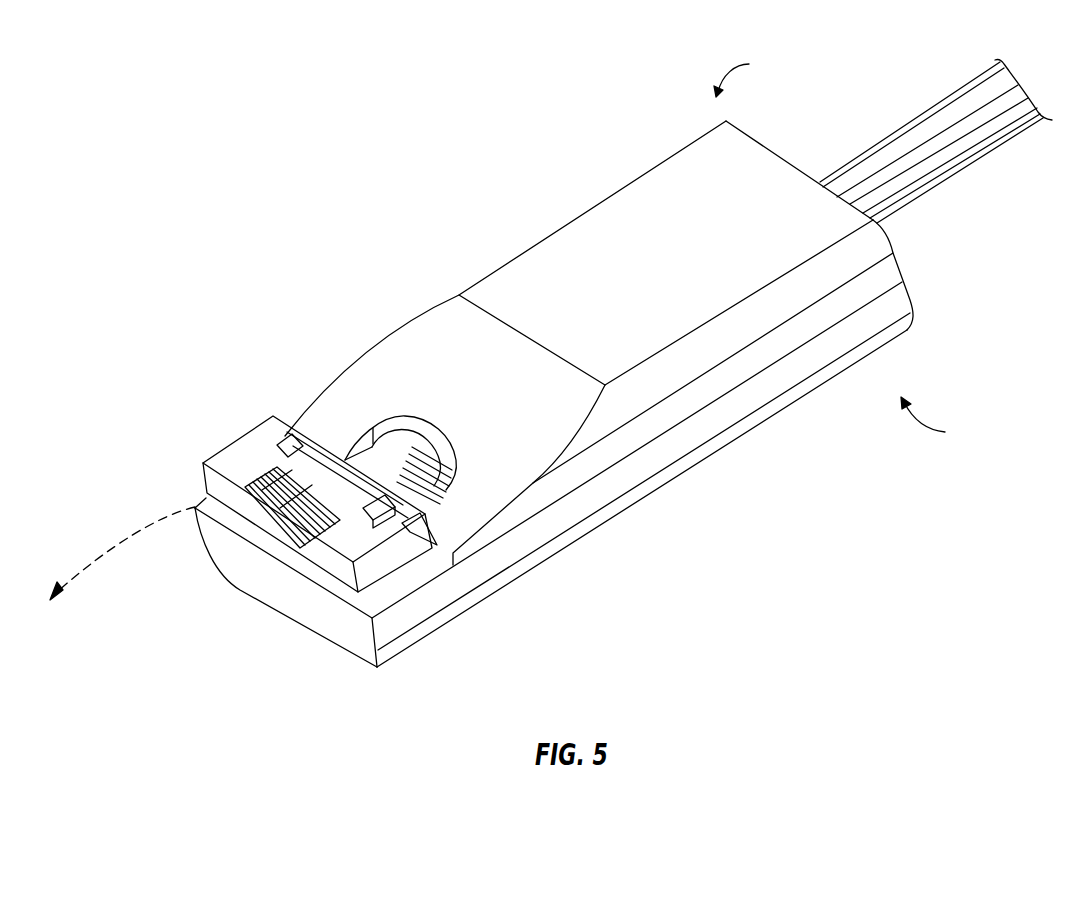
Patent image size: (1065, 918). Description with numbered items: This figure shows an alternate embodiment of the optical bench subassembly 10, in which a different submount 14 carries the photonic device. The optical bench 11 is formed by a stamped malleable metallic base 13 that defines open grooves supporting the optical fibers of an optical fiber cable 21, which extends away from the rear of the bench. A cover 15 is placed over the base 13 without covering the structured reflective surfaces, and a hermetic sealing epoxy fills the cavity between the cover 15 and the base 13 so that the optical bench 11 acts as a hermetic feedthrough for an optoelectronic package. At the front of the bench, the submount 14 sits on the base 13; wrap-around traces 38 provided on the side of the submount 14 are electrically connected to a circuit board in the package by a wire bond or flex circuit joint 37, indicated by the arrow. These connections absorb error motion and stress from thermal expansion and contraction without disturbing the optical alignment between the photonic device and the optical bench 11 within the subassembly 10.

The optical bench subassembly 10 is at (944, 422).
The optical bench 11 is at (754, 77).
The base 13 is at (913, 302).
The submount 14 is at (203, 480).
The cover 15 is at (780, 153).
The optical fiber cable 21 is at (960, 158).
The wire bond or flex circuit joint 37 is at (132, 537).
The wrap-around traces 38 is at (273, 503).